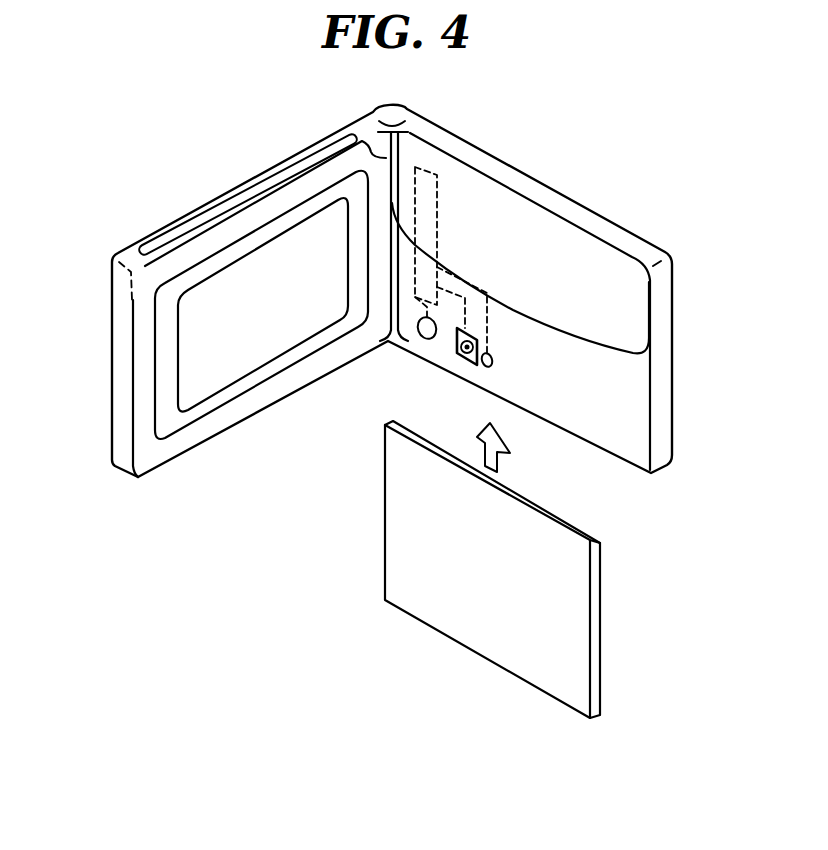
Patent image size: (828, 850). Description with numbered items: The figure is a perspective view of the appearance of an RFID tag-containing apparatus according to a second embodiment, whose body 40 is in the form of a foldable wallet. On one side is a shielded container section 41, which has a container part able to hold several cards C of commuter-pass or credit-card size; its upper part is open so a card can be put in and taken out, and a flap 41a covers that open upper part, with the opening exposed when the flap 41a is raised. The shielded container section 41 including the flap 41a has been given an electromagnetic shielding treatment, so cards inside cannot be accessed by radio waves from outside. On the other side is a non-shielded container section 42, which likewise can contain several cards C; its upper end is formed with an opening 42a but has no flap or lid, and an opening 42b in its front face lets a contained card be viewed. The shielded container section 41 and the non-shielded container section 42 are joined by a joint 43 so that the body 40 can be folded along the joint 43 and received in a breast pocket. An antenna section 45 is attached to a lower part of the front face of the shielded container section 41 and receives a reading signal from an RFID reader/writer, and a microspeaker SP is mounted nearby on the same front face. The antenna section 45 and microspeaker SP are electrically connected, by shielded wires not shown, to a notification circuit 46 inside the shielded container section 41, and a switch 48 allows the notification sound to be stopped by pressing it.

The body 40 is at (503, 141).
The shielded container section 41 is at (662, 387).
The flap 41a is at (627, 302).
The non-shielded container section 42 is at (120, 450).
The opening 42a is at (266, 186).
The opening 42b is at (236, 374).
The joint 43 is at (368, 139).
The antenna section 45 is at (468, 363).
The notification circuit 46 is at (428, 178).
The switch 48 is at (488, 367).
The microspeaker SP is at (422, 342).
The card C is at (553, 612).